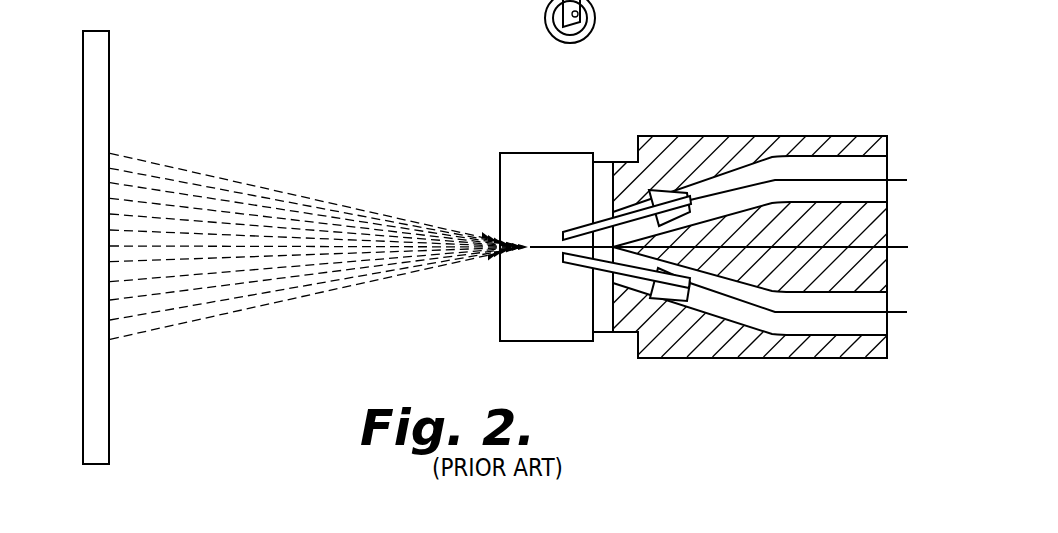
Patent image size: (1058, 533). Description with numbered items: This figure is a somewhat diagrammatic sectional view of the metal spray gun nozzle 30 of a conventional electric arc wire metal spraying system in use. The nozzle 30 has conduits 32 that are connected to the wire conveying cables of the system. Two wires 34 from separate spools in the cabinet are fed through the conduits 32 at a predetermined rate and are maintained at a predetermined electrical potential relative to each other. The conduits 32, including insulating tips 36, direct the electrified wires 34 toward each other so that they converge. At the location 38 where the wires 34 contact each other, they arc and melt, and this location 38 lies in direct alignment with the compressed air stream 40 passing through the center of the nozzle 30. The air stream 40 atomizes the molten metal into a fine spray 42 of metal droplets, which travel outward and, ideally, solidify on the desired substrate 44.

The nozzle 30 is at (696, 140).
The conduits 32 is at (800, 143).
The wires 34 is at (897, 178).
The insulating tips 36 is at (565, 233).
The location 38 is at (530, 246).
The compressed air stream 40 is at (898, 245).
The fine spray 42 is at (290, 192).
The substrate 44 is at (107, 88).